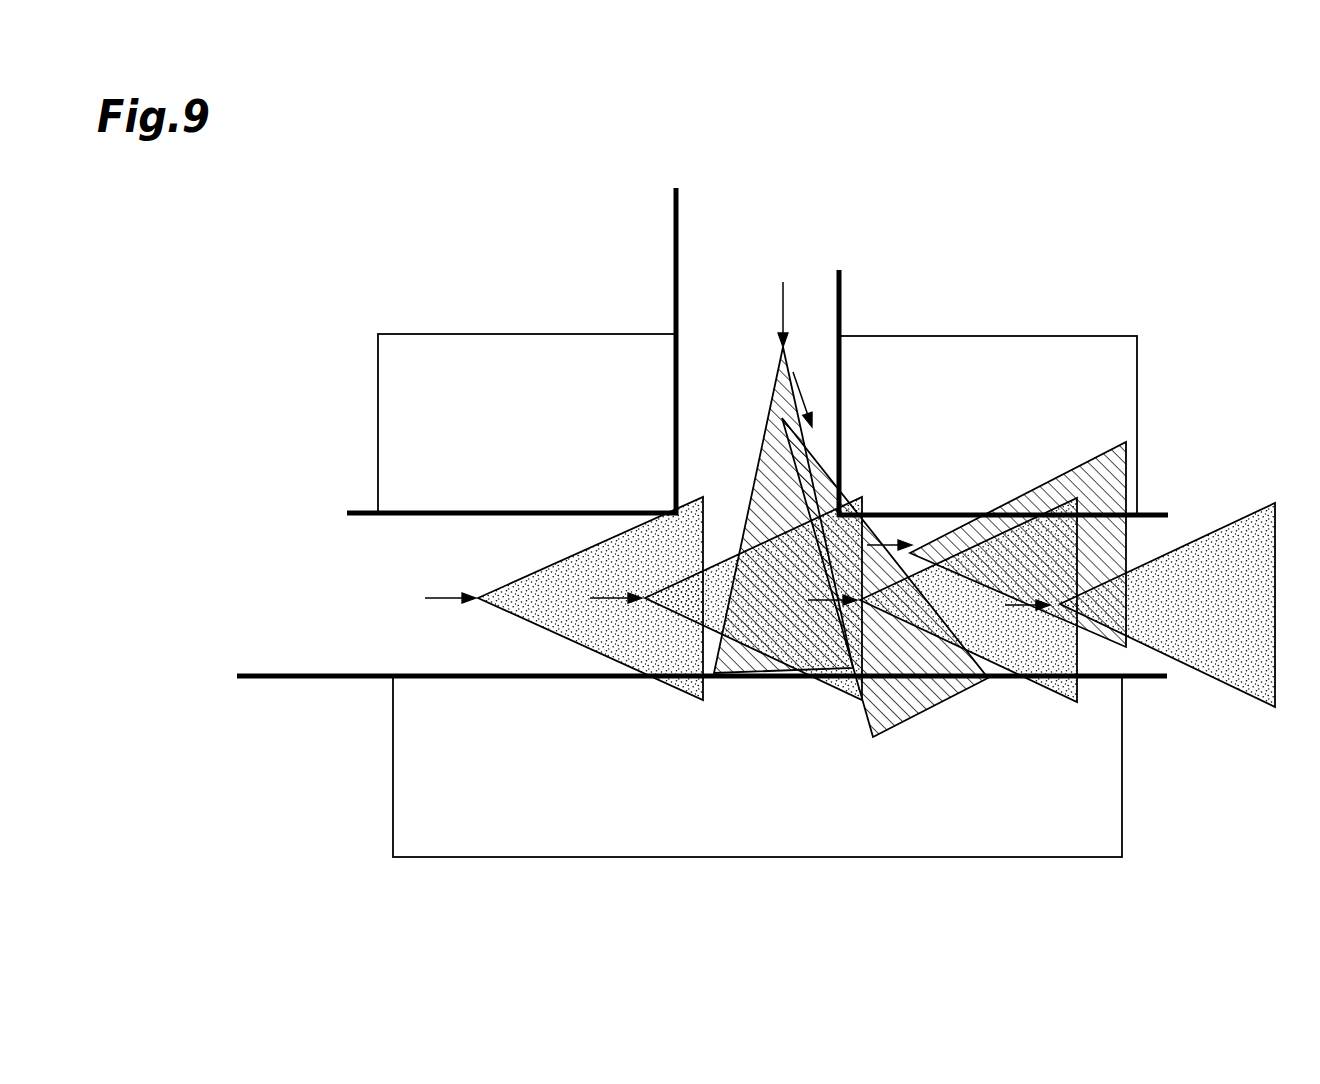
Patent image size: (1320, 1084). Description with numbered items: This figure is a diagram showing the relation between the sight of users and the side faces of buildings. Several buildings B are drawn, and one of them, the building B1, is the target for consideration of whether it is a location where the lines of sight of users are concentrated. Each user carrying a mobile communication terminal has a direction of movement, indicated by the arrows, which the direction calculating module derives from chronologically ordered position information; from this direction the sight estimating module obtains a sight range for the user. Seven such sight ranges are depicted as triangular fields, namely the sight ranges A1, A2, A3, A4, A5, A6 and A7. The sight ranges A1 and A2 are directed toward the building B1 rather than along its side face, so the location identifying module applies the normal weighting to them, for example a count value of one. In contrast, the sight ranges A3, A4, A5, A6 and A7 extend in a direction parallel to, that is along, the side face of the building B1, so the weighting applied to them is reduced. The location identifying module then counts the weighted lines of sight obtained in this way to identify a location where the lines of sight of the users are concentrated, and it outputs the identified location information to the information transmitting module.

The sight range A1 is at (745, 668).
The sight range A2 is at (915, 700).
The sight range A3 is at (1081, 480).
The sight range A4 is at (650, 665).
The sight range A5 is at (723, 573).
The sight range A6 is at (1033, 667).
The sight range A7 is at (1225, 667).
The building B is at (527, 350).
The building B1 is at (762, 835).